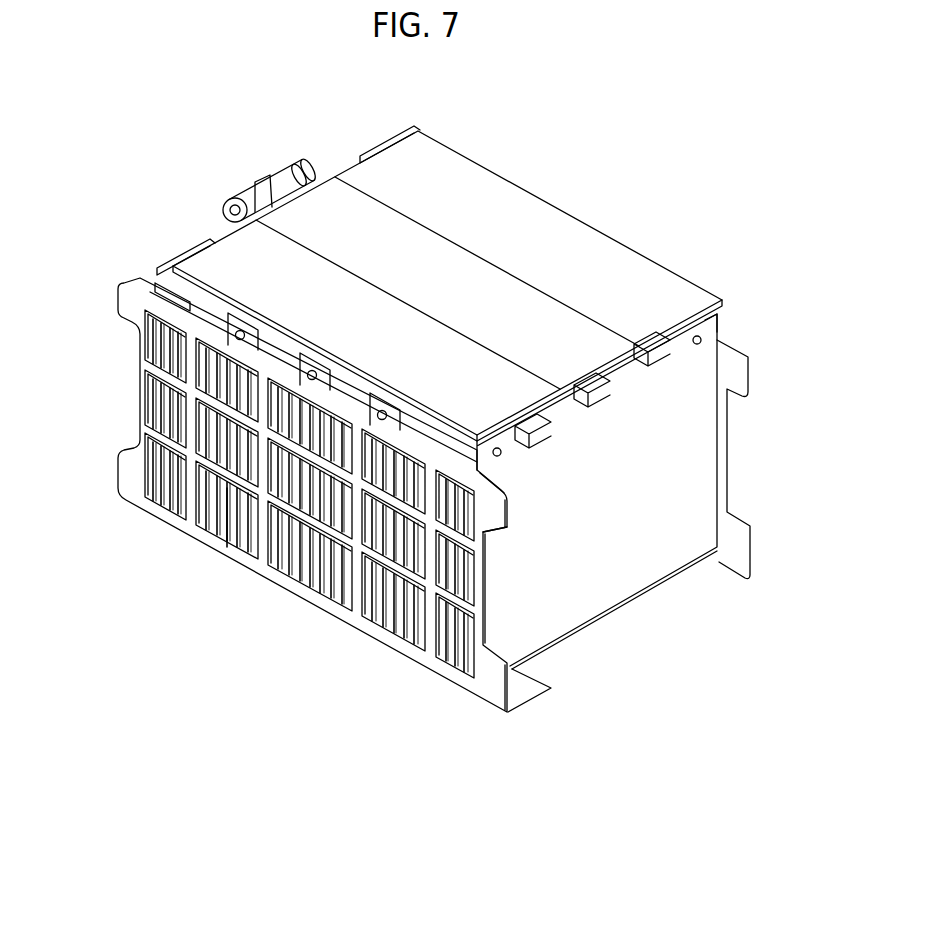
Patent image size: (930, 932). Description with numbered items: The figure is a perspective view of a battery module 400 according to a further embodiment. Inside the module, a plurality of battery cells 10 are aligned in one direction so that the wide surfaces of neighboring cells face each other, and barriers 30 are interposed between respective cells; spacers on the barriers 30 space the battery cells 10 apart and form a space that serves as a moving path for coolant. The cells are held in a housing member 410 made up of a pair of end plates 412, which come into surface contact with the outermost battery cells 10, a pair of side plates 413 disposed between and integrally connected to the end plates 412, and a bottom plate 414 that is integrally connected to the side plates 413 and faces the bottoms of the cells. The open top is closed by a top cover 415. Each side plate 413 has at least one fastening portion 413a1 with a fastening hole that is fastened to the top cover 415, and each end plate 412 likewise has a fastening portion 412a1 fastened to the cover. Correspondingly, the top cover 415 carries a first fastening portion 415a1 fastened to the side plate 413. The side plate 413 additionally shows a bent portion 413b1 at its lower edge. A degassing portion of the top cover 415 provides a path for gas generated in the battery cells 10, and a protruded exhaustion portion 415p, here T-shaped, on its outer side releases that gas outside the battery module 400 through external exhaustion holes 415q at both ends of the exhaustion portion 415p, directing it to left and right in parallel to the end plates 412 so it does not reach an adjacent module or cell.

The battery module 400 is at (578, 114).
The top cover 415 is at (602, 230).
The exhaustion portion 415p is at (245, 175).
The external exhaustion holes 415q is at (233, 212).
The first fastening portion 415a1 is at (235, 314).
The fastening portion 413a1 is at (298, 369).
The fastening portion 412a1 is at (713, 326).
The end plate 412 is at (697, 456).
The side plate 413 is at (500, 688).
The front plate bent flange 413b1 is at (497, 522).
The bottom plate 414 is at (528, 703).
The housing member 410 is at (601, 770).
The barrier 30 is at (228, 525).
The battery cell 10 is at (254, 532).